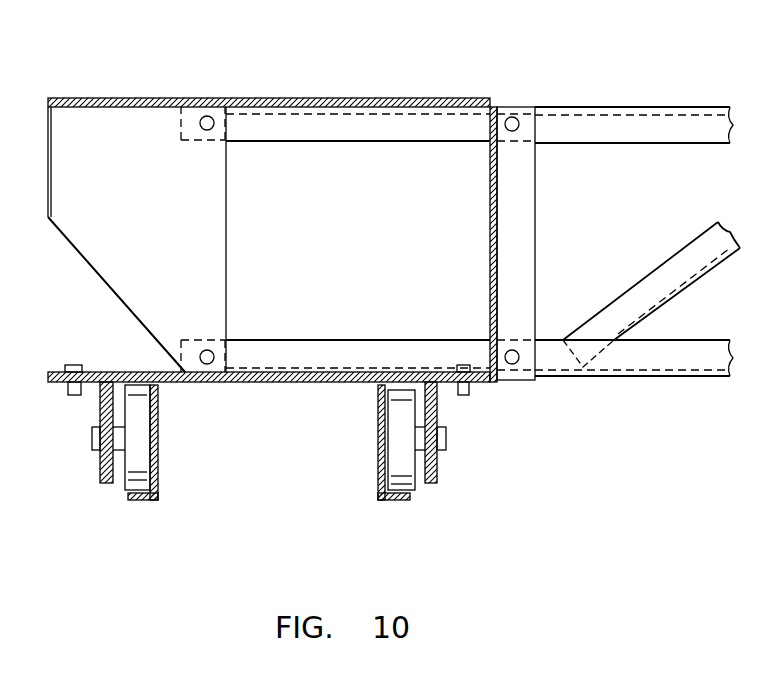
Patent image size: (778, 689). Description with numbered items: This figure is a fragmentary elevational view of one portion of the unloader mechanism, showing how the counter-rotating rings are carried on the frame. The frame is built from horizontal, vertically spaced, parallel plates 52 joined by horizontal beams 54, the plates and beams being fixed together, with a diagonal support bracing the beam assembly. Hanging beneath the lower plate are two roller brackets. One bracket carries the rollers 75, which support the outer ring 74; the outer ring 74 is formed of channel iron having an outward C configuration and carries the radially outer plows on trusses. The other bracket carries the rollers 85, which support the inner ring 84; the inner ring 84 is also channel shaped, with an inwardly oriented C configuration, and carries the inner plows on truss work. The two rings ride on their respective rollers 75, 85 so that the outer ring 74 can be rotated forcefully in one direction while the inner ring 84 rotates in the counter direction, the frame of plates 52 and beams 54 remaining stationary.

The horizontal plates 52 is at (369, 103).
The horizontal beams 54 is at (577, 122).
The outer ring 74 is at (158, 452).
The rollers 75 is at (124, 482).
The inner ring 84 is at (380, 485).
The rollers 85 is at (408, 420).